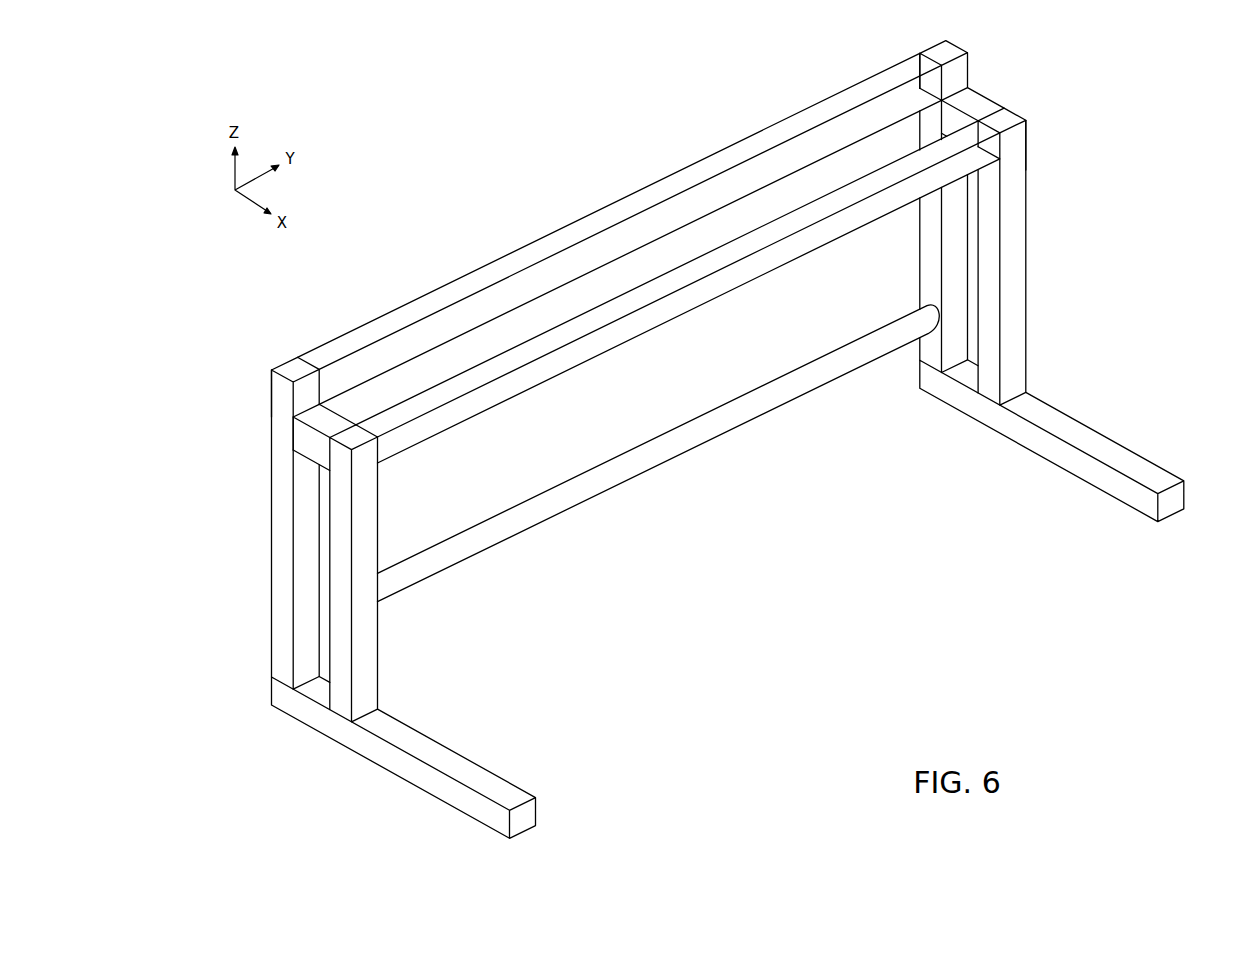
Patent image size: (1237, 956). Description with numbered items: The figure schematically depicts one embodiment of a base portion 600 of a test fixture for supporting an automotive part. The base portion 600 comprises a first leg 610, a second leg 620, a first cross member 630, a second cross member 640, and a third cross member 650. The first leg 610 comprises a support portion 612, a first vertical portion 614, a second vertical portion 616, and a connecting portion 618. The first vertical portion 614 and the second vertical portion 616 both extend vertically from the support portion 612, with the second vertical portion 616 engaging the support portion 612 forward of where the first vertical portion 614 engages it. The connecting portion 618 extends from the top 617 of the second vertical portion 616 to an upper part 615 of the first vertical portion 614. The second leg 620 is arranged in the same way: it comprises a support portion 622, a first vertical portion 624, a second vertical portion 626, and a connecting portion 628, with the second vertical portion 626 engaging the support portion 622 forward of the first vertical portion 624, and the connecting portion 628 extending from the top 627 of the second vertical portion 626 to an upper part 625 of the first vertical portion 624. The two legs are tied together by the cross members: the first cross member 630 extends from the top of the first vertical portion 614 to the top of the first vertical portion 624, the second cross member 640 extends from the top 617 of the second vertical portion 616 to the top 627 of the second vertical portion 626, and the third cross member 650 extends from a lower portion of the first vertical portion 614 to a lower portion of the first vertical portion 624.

The base portion 600 is at (648, 163).
The first leg 610 is at (274, 716).
The support portion 612 is at (422, 783).
The first vertical portion 614 is at (272, 545).
The upper part 615 is at (272, 415).
The second vertical portion 616 is at (378, 635).
The top 617 is at (368, 462).
The connecting portion 618 is at (312, 445).
The second leg 620 is at (1075, 414).
The support portion 622 is at (1155, 470).
The first vertical portion 624 is at (920, 270).
The upper part 625 is at (938, 108).
The second vertical portion 626 is at (1024, 262).
The top 627 is at (1024, 143).
The connecting portion 628 is at (983, 98).
The first cross member 630 is at (598, 225).
The second cross member 640 is at (617, 345).
The third cross member 650 is at (618, 480).